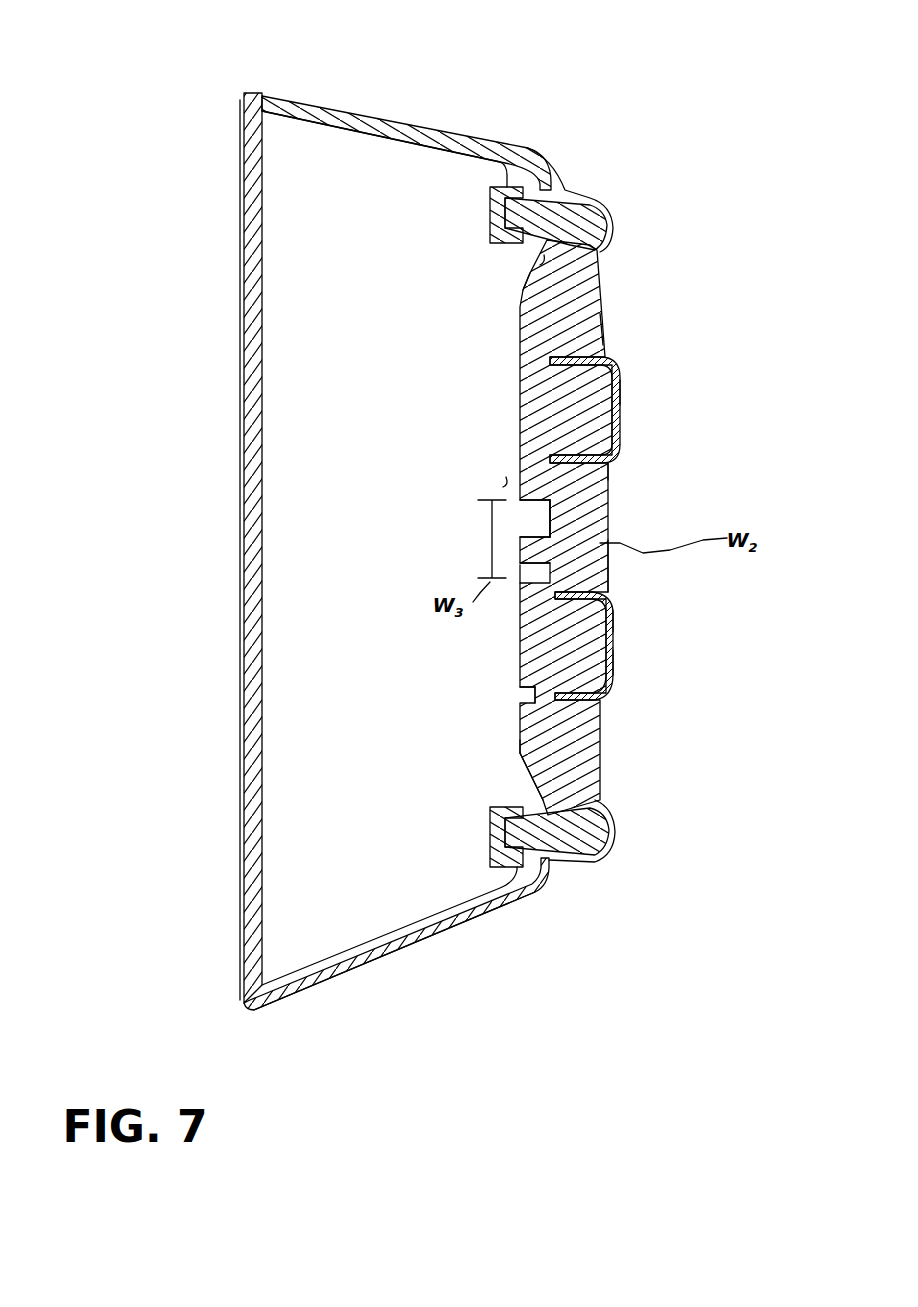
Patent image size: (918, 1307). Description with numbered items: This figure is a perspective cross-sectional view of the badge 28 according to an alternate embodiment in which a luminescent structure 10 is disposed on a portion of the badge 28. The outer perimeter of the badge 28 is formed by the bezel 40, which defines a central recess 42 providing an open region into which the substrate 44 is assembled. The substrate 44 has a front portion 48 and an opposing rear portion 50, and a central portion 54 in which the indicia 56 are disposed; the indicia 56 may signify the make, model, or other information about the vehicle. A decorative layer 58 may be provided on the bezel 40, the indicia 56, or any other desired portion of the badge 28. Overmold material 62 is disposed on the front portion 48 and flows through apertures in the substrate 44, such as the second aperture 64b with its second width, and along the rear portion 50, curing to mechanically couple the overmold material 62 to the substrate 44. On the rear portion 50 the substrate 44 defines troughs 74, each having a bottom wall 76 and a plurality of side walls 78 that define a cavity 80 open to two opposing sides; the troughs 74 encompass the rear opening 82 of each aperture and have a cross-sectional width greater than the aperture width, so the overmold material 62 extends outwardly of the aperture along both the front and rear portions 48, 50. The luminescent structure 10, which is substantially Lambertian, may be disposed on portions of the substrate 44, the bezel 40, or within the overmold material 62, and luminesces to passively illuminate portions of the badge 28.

The badge 28 is at (217, 103).
The decorative layer 58 is at (367, 110).
The rear portion 50 is at (496, 658).
The indicia 56 is at (615, 375).
The luminescent structure 10 is at (628, 391).
The cavity 80 is at (540, 265).
The side walls 78 is at (527, 312).
The bottom wall 76 is at (520, 332).
The troughs 74 is at (508, 361).
The central recess 42 is at (503, 487).
The overmold material 62 is at (583, 313).
The rear opening 82 is at (580, 337).
The substrate 44 is at (615, 443).
The second aperture 64b is at (566, 531).
The central portion 54 is at (582, 567).
The front portion 48 is at (615, 663).
The bezel 40 is at (343, 967).